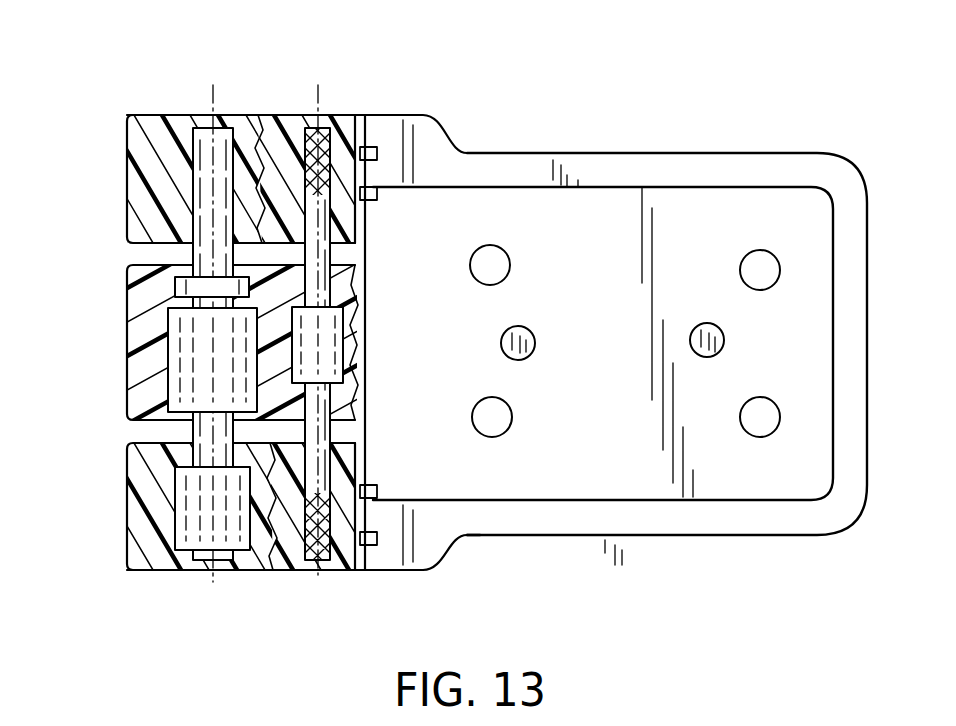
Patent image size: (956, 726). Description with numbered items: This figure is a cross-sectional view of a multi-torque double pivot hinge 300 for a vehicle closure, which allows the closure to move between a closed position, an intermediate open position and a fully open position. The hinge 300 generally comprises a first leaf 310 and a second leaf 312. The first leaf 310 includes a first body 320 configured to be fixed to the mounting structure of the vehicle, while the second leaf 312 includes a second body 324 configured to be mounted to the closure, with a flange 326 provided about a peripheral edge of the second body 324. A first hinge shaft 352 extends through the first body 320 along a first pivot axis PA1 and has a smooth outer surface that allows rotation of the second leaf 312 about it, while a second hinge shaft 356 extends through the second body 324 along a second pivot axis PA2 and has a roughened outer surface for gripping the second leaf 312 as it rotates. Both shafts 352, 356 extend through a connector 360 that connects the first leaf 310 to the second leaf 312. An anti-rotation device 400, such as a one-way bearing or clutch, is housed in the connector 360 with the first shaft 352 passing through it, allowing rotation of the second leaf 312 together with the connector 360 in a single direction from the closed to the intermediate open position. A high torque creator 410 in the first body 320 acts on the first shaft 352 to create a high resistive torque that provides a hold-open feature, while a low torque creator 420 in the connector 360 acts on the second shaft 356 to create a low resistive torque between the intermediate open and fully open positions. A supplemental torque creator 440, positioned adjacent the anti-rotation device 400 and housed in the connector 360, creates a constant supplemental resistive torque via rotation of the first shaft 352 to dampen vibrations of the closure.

The multi-torque double pivot hinge 300 is at (590, 100).
The first leaf 310 is at (150, 573).
The second leaf 312 is at (726, 190).
The first body 320 is at (132, 148).
The second body 324 is at (642, 482).
The flange 326 is at (753, 520).
The first hinge shaft 352 is at (203, 145).
The second hinge shaft 356 is at (318, 464).
The connector 360 is at (125, 276).
The anti-rotation device 400 is at (183, 367).
The high torque creator 410 is at (187, 517).
The low torque creator 420 is at (336, 345).
The supplemental torque creator 440 is at (178, 293).
The first pivot axis PA1 is at (215, 583).
The second pivot axis PA2 is at (320, 102).